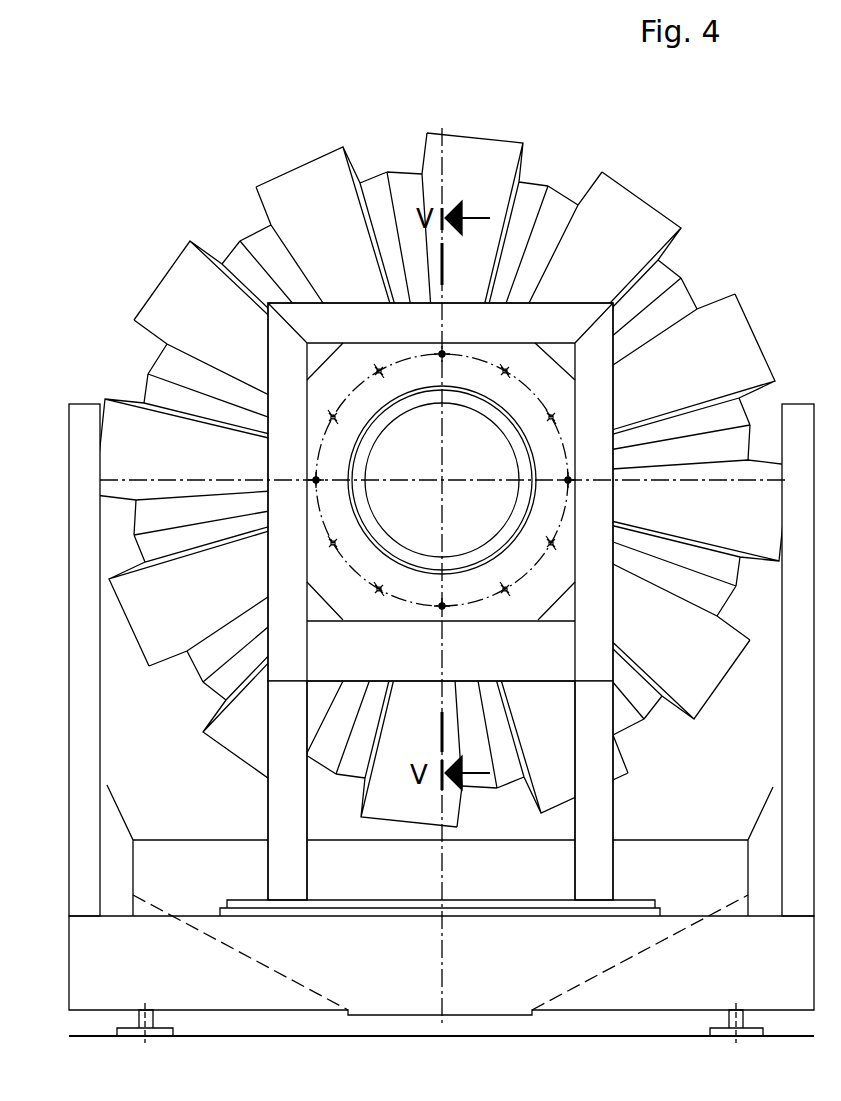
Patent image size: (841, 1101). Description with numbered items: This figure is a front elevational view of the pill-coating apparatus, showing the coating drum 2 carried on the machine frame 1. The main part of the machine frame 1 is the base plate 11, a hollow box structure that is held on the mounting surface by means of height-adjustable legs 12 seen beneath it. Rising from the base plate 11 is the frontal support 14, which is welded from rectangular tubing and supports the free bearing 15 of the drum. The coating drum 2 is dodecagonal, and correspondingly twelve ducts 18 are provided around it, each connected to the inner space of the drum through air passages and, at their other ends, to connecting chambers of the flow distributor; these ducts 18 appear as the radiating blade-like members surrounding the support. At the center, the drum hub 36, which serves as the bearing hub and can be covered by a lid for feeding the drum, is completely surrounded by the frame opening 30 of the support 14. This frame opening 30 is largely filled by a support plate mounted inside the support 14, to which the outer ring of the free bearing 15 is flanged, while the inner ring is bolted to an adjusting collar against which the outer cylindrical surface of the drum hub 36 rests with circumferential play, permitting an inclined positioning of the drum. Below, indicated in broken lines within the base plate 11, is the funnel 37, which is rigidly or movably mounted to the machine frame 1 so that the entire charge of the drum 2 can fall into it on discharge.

The machine frame 1 is at (85, 396).
The coating drum 2 is at (442, 444).
The base plate 11 is at (201, 991).
The height-adjustable legs 12 is at (145, 1042).
The frontal support 14 is at (622, 379).
The free bearing 15 is at (564, 440).
The ducts 18 is at (598, 167).
The frame opening 30 is at (556, 589).
The drum hub 36 is at (387, 418).
The funnel 37 is at (303, 985).